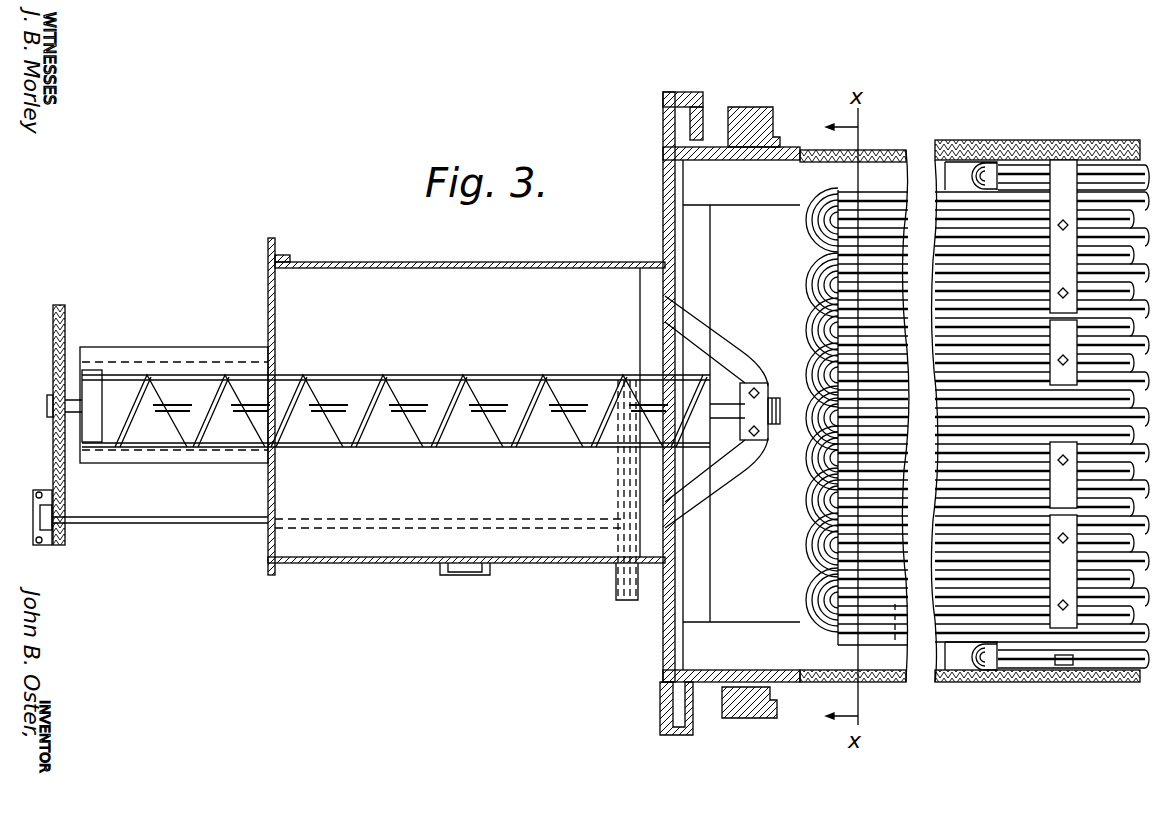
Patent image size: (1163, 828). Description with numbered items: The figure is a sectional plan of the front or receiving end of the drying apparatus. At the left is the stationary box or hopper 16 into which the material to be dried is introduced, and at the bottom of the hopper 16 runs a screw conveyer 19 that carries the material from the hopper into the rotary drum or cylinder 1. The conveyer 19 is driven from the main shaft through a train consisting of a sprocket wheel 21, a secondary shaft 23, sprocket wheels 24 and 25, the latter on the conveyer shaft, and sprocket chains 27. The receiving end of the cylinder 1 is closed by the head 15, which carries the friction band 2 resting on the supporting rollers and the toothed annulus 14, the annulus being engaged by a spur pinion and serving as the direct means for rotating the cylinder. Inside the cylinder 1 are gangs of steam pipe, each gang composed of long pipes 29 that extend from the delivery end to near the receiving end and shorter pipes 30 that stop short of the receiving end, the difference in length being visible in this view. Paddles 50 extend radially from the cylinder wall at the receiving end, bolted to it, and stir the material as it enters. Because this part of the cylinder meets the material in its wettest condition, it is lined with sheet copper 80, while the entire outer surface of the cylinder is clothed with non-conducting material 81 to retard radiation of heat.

The rotary drum or cylinder 1 is at (990, 145).
The friction band 2 is at (757, 108).
The toothed annulus 14 is at (667, 703).
The head of the cylinder 15 is at (782, 690).
The stationary box or hopper 16 is at (518, 406).
The screw conveyer 19 is at (422, 429).
The sprocket wheel 21 is at (620, 568).
The secondary shaft 23 is at (152, 521).
The sprocket wheel 24 is at (62, 540).
The sprocket wheel 25 is at (68, 402).
The sprocket chain 27 is at (174, 389).
The steam pipe 29 is at (980, 205).
The steam pipe 30 is at (1032, 177).
The paddle 50 is at (786, 387).
The sheet copper lining 80 is at (1093, 686).
The non-conducting material 81 is at (963, 688).